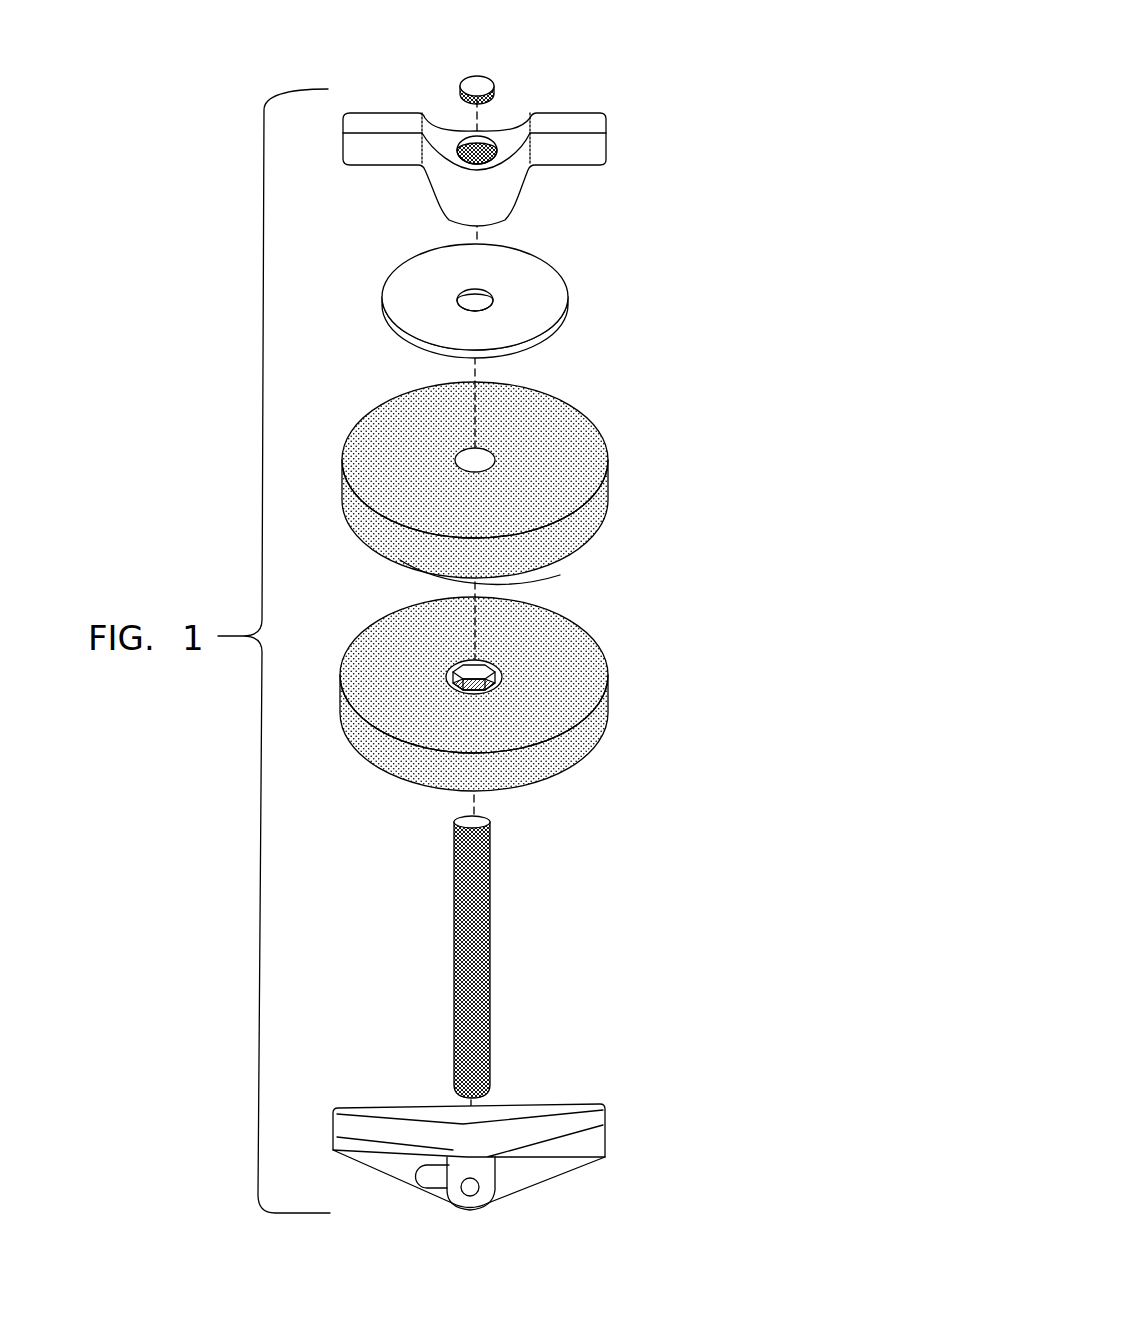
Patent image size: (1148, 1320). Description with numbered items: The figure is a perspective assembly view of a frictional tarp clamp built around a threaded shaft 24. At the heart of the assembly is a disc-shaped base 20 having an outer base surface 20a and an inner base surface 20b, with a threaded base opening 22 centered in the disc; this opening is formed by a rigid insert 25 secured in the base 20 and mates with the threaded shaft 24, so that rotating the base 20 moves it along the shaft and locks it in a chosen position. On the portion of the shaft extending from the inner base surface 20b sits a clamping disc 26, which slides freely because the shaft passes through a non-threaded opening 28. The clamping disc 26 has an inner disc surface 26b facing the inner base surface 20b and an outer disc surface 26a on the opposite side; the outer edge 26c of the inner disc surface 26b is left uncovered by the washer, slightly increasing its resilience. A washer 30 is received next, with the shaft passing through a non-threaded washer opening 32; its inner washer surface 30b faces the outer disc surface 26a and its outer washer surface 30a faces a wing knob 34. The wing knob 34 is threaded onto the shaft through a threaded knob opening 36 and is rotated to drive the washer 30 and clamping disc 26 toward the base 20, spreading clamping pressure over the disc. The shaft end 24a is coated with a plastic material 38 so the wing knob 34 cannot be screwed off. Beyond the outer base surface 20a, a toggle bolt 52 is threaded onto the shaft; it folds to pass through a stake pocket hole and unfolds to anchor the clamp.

The base 20 is at (613, 641).
The outer base surface 20a is at (568, 758).
The inner base surface 20b is at (567, 562).
The threaded base opening 22 is at (500, 670).
The threaded shaft 24 is at (562, 950).
The shaft end 24a is at (483, 827).
The rigid insert 25 is at (500, 675).
The clamping disc 26 is at (618, 420).
The outer disc surface 26a is at (580, 440).
The inner disc surface 26b is at (567, 554).
The outer edge 26c is at (597, 537).
The non-threaded opening 28 is at (483, 458).
The washer 30 is at (631, 227).
The outer washer surface 30a is at (492, 292).
The inner washer surface 30b is at (545, 340).
The non-threaded washer opening 32 is at (538, 270).
The wing knob 34 is at (538, 116).
The threaded knob opening 36 is at (487, 150).
The plastic material 38 is at (487, 85).
The toggle bolt 52 is at (581, 1082).